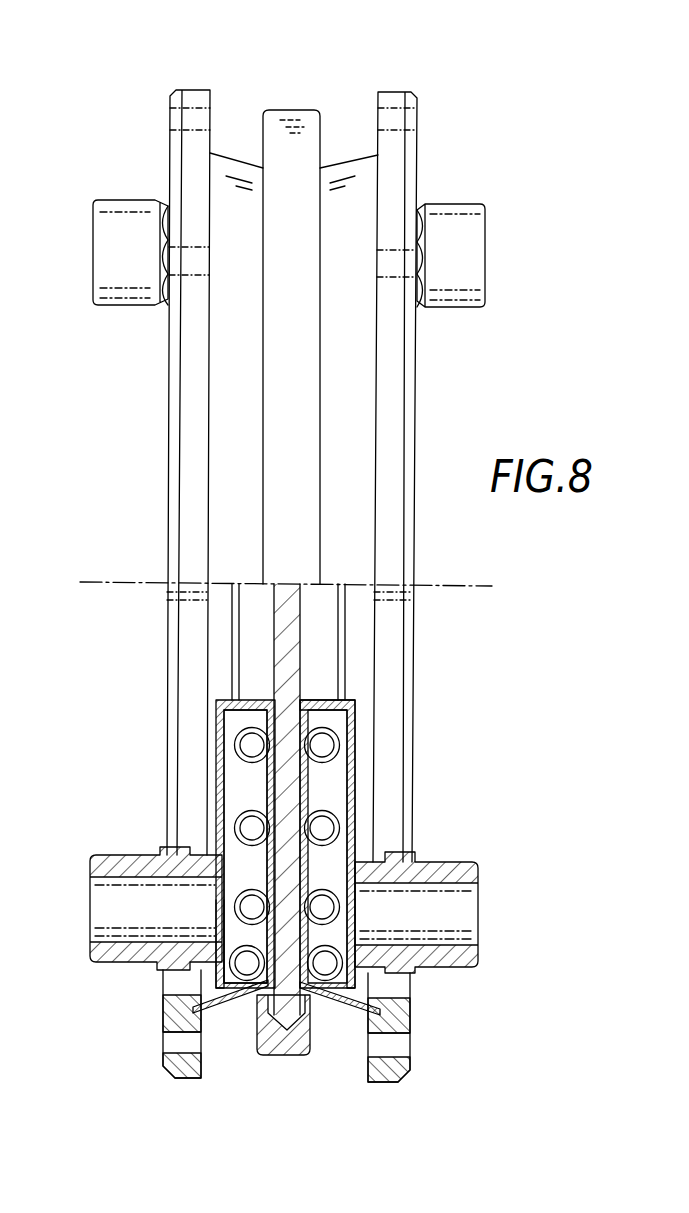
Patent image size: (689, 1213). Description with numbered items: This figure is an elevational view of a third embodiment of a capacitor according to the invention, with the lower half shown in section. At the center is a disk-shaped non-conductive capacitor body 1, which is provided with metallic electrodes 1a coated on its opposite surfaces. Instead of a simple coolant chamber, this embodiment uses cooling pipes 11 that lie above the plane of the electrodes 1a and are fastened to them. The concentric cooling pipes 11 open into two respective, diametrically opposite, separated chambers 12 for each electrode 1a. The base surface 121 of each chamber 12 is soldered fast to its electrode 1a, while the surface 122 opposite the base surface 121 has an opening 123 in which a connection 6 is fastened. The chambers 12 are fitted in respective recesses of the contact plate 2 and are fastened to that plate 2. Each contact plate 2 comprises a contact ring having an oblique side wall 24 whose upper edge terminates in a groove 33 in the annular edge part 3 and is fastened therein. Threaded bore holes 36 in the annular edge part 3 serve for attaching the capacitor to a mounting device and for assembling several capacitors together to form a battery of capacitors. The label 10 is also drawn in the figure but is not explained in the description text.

The capacitor body 1 is at (287, 127).
The electrode 1a is at (296, 1000).
The contact plate 2 is at (267, 797).
The annular edge part 3 is at (180, 1022).
The connection 6 is at (115, 247).
The support plate 10 is at (163, 160).
The cooling pipe 11 is at (245, 730).
The chamber 12 is at (234, 770).
The oblique side wall 24 is at (223, 1005).
The groove 33 is at (193, 1009).
The threaded bore hole 36 is at (182, 1048).
The base surface 121 is at (280, 787).
The surface 122 is at (250, 838).
The opening 123 is at (220, 923).